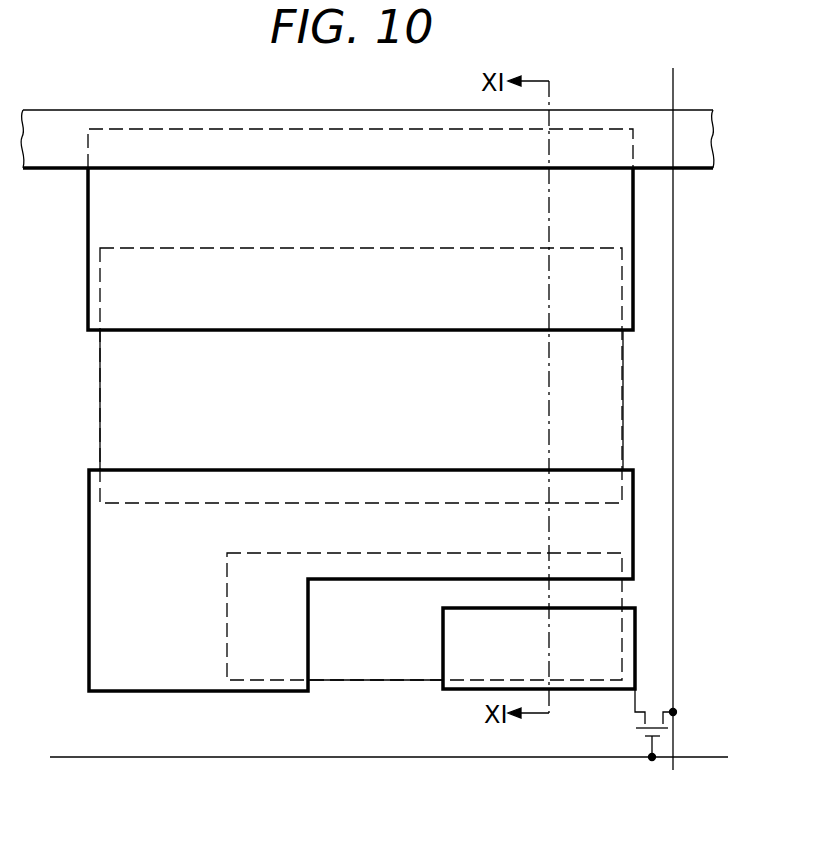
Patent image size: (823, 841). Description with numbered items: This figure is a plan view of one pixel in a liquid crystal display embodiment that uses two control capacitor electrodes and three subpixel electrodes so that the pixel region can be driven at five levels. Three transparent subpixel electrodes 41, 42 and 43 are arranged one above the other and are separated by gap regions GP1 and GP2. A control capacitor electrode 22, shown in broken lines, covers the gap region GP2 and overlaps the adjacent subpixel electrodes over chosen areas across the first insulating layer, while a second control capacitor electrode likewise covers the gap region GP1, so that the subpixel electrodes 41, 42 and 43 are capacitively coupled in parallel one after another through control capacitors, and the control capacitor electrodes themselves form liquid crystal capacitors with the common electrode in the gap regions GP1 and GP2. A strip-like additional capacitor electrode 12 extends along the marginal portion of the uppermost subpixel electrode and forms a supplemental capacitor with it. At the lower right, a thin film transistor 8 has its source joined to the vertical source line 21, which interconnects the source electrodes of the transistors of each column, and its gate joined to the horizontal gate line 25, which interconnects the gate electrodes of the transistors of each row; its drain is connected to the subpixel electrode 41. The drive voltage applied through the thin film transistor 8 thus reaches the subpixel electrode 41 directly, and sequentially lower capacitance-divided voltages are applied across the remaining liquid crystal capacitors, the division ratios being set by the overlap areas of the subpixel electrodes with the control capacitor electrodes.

The additional capacitor electrode 12 is at (583, 108).
The subpixel electrode 43 is at (88, 206).
The control capacitor electrode 22 is at (100, 398).
The subpixel electrode 42 is at (121, 694).
The source line 21 is at (340, 683).
The subpixel electrode 41 is at (461, 692).
The gap region GP1 is at (391, 664).
The gap region GP2 is at (604, 384).
The gate line 25 is at (245, 759).
The thin film transistor 8 is at (633, 733).